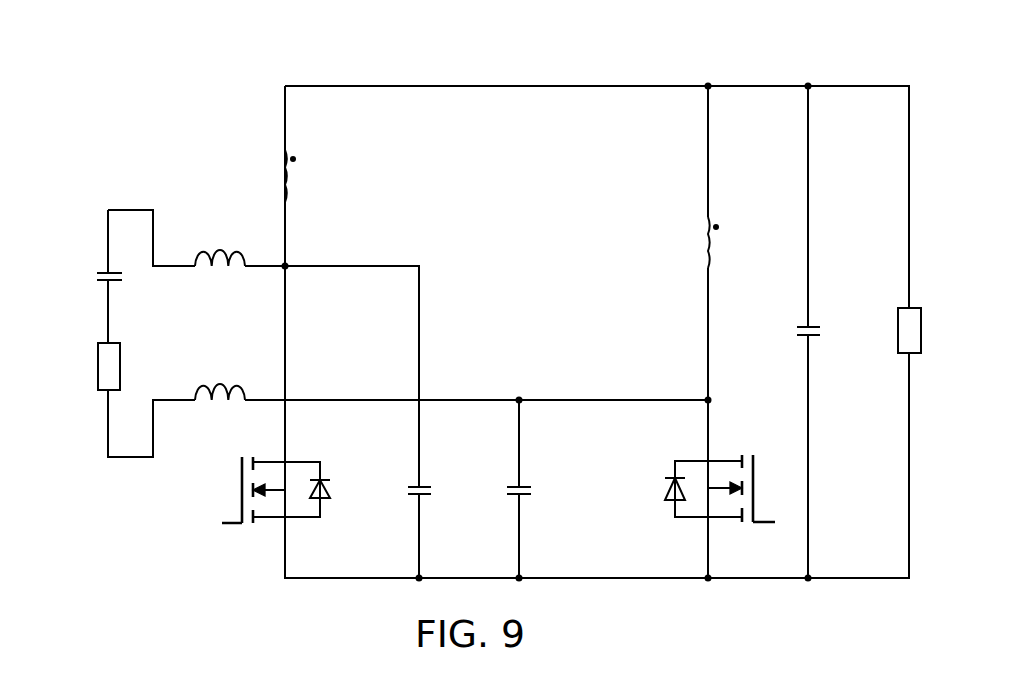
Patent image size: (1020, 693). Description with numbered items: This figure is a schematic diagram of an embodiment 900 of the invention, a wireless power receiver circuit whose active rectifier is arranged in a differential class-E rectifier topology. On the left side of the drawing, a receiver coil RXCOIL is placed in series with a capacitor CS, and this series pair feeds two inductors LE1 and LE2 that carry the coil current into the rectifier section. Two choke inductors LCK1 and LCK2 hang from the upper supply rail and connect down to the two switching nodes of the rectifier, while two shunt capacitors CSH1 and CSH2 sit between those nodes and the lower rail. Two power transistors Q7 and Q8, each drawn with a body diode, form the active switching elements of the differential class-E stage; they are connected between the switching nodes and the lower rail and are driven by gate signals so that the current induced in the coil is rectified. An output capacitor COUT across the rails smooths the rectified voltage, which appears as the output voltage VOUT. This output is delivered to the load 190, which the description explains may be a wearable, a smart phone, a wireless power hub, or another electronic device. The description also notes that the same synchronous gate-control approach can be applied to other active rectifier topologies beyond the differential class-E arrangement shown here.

The embodiment 900 is at (175, 87).
The load 190 is at (897, 348).
The series capacitor CS is at (92, 282).
The receive coil RXCOIL is at (89, 377).
The first inductor LE1 is at (220, 235).
The second inductor LE2 is at (220, 370).
The first choke inductor LCK1 is at (321, 176).
The second choke inductor LCK2 is at (744, 242).
The first shunt capacitor CSH1 is at (449, 494).
The second shunt capacitor CSH2 is at (549, 494).
The output capacitor COUT is at (840, 337).
The output voltage VOUT is at (858, 153).
The first transistor Q7 is at (268, 490).
The second transistor Q8 is at (727, 488).